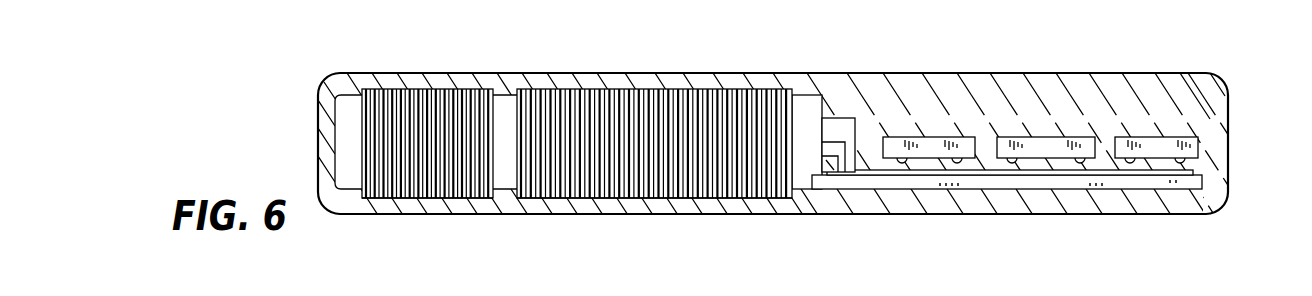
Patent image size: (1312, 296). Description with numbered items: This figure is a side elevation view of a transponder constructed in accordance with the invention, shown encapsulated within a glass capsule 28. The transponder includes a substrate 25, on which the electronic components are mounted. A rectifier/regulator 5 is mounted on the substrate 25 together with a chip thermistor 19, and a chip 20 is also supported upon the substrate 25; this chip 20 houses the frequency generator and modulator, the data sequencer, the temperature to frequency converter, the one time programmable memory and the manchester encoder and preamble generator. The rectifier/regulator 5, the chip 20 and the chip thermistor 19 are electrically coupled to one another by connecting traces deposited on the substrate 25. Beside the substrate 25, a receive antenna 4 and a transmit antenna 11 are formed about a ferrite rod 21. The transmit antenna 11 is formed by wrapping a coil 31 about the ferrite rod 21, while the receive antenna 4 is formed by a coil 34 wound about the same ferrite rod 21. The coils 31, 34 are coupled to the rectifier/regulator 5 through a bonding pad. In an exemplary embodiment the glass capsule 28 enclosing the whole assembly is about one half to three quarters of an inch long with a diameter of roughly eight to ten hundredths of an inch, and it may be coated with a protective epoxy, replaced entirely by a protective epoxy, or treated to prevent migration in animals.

The glass capsule 28 is at (1200, 81).
The ferrite rod 21 is at (342, 142).
The coil 31 is at (447, 97).
The transmit antenna 11 is at (439, 205).
The coil 34 is at (686, 98).
The receive antenna 4 is at (669, 205).
The substrate 25 is at (1165, 182).
The rectifier/regulator 5 is at (926, 143).
The chip 20 is at (1036, 142).
The chip thermistor 19 is at (1141, 142).